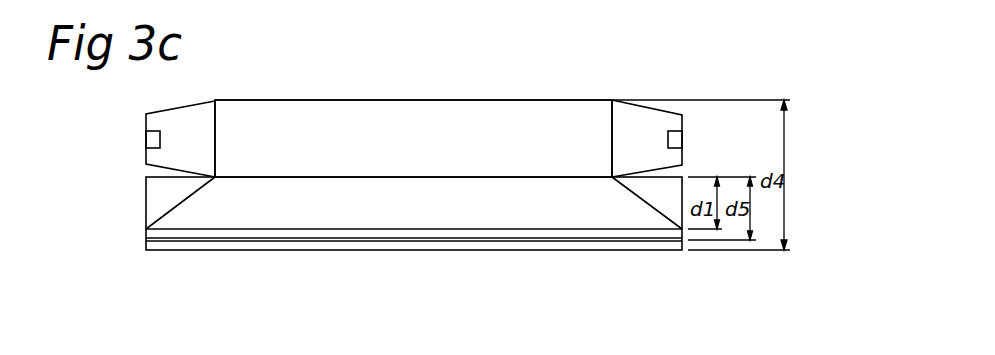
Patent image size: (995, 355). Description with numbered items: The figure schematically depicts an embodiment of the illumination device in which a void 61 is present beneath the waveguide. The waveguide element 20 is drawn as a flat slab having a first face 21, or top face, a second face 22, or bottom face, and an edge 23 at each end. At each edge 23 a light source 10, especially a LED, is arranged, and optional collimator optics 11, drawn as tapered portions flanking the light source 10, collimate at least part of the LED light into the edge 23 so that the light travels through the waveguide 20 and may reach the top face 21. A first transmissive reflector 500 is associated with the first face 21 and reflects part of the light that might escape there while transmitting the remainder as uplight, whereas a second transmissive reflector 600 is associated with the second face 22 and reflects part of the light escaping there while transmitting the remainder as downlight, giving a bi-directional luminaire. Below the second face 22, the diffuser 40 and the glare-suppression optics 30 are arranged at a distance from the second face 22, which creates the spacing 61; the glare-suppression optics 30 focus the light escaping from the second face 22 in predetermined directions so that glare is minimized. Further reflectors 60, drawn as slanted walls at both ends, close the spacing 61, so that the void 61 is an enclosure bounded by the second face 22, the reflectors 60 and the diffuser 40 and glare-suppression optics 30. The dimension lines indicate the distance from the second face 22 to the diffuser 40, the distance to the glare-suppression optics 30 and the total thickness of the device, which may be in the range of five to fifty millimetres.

The light source 10 is at (151, 137).
The collimator optics 11 is at (133, 116).
The waveguide element 20 is at (408, 122).
The first face 21 is at (508, 100).
The second face 22 is at (530, 178).
The edge 23 is at (217, 127).
The glare-suppression optics 30 is at (220, 246).
The diffuser 40 is at (294, 238).
The reflectors 60 is at (157, 203).
The void 61 is at (383, 205).
The first transmissive reflector 500 is at (412, 98).
The second transmissive reflector 600 is at (385, 248).